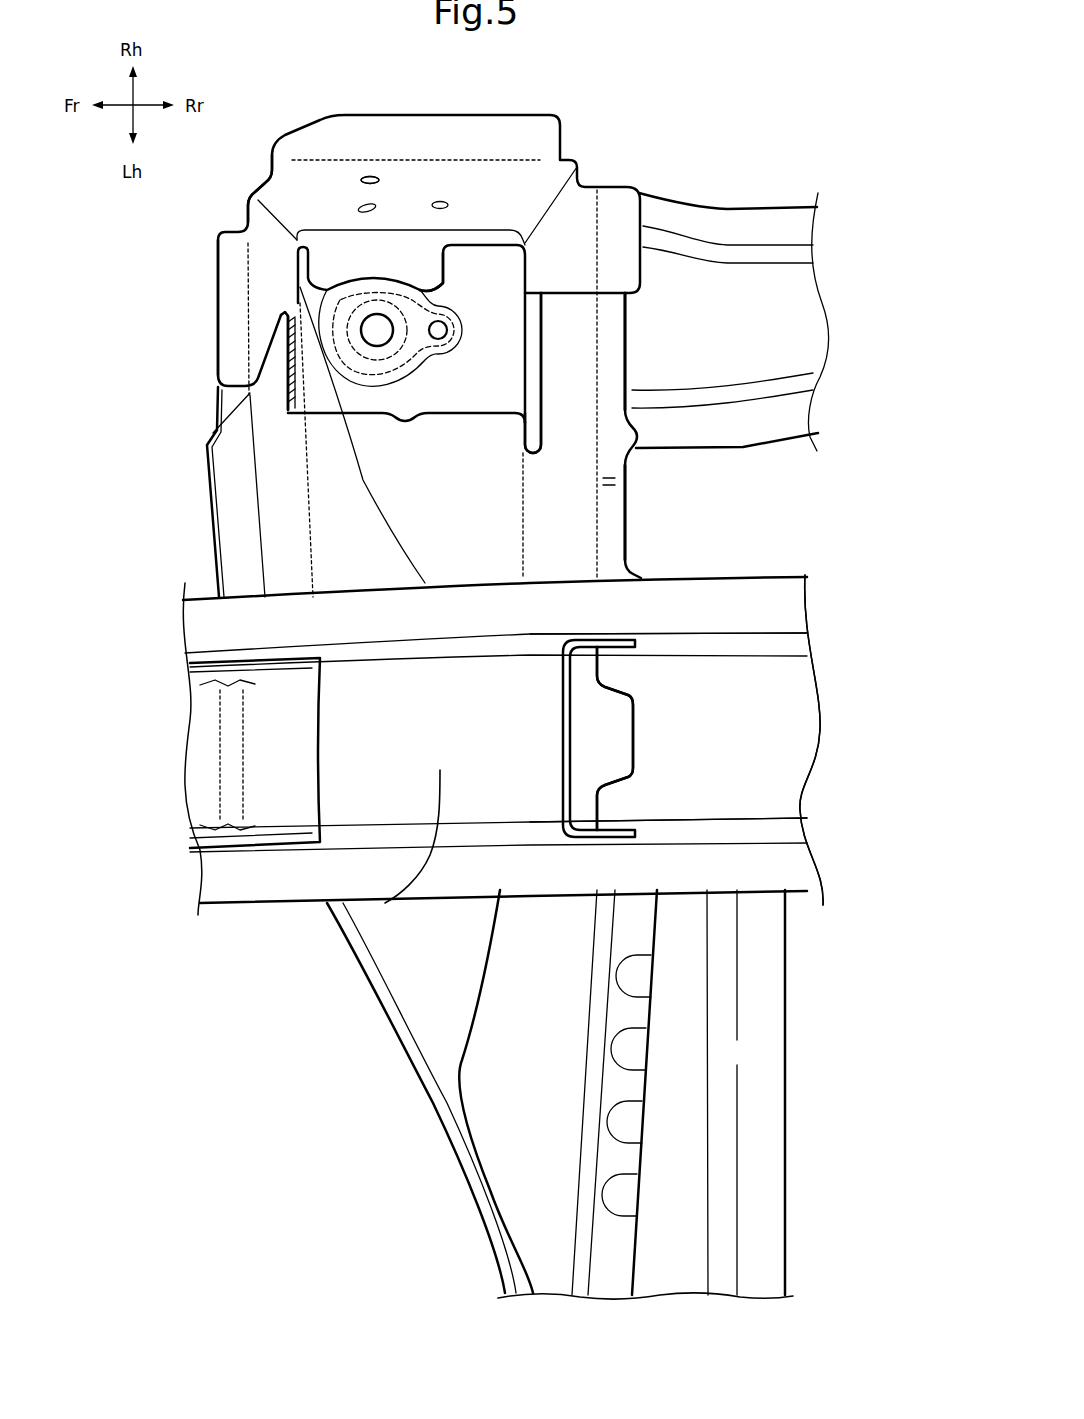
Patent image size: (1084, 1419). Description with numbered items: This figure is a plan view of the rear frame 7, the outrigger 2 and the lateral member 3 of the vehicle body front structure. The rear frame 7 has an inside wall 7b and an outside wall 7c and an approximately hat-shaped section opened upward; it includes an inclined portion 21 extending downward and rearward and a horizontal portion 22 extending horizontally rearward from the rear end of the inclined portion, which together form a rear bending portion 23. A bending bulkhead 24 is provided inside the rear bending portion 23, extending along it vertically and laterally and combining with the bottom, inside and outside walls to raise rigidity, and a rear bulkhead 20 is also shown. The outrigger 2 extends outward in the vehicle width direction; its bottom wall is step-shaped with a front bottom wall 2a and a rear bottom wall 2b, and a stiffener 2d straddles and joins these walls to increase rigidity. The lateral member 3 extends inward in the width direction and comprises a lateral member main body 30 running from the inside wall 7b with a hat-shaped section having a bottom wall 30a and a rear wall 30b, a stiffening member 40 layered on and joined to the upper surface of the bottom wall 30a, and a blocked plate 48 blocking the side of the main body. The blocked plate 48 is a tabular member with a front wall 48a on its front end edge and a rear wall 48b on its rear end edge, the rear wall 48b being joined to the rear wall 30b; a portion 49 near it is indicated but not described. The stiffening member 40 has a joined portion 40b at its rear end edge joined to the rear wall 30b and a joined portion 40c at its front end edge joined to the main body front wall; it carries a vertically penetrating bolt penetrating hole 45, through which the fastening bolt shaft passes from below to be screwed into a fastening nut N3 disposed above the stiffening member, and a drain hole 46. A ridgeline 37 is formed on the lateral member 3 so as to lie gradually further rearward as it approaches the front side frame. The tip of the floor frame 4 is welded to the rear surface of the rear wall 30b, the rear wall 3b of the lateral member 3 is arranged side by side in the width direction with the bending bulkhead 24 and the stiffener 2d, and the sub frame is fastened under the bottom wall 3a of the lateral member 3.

The outrigger 2 is at (433, 1110).
The front bottom wall 2a is at (430, 1012).
The rear bottom wall 2b is at (673, 1143).
The stiffener 2d is at (630, 1008).
The lateral member 3 is at (238, 214).
The bottom wall of the lateral member 3a is at (477, 500).
The rear wall of the lateral member 3b is at (570, 552).
The floor frame 4 is at (695, 215).
The rear frame 7 is at (248, 912).
The inside wall 7b is at (760, 648).
The outside wall 7c is at (760, 828).
The rear bulkhead 20 is at (258, 768).
The inclined portion 21 is at (385, 903).
The horizontal portion 22 is at (753, 740).
The rear bending portion 23 is at (615, 630).
The bending bulkhead 24 is at (563, 742).
The lateral member main body 30 is at (208, 502).
The bottom wall 30a is at (477, 500).
The rear wall 30b is at (570, 552).
The ridgeline 37 is at (383, 511).
The stiffening member 40 is at (552, 338).
The joined portion 40b is at (518, 366).
The joined portion 40c is at (300, 373).
The bolt penetrating hole 45 is at (367, 330).
The drain hole 46 is at (438, 333).
The blocked plate 48 is at (566, 142).
The front wall 48a is at (260, 283).
The rear wall 48b is at (572, 257).
The upper bracket top face 49 is at (382, 263).
The fastening nut N3 is at (450, 288).